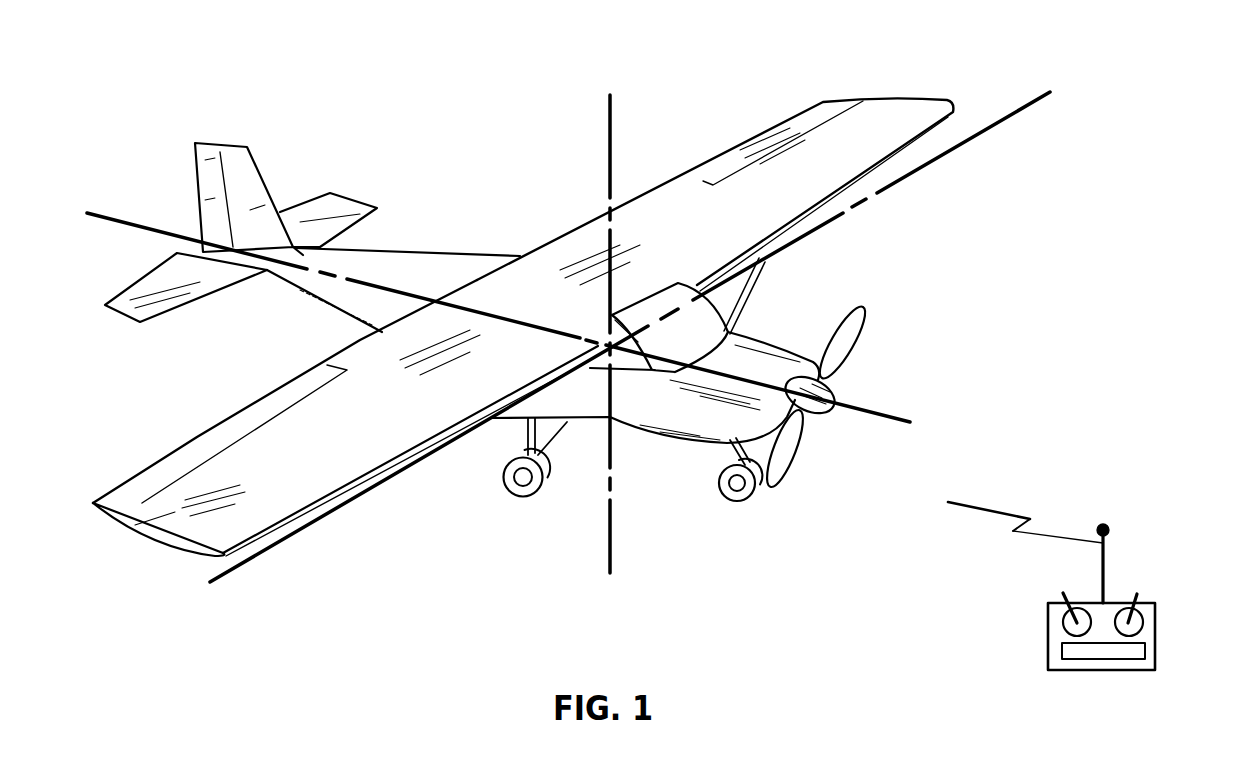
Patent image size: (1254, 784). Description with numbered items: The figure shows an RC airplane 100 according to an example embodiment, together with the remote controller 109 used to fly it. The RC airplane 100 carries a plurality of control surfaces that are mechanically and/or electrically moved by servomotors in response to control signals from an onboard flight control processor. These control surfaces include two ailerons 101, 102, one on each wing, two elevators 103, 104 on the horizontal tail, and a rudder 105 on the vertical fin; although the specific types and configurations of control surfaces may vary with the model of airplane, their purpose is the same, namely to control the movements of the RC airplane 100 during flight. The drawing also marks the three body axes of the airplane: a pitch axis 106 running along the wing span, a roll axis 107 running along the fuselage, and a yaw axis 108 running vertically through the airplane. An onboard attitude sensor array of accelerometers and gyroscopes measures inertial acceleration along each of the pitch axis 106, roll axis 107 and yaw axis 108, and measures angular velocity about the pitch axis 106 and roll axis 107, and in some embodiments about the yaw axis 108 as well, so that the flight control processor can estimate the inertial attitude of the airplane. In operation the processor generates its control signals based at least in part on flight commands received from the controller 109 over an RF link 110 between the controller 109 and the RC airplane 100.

The RC airplane 100 is at (549, 301).
The aileron 101 is at (772, 136).
The aileron 102 is at (200, 435).
The elevator 103 is at (307, 205).
The elevator 104 is at (140, 280).
The rudder 105 is at (195, 200).
The pitch axis 106 is at (1014, 108).
The roll axis 107 is at (877, 417).
The yaw axis 108 is at (610, 523).
The controller 109 is at (1155, 620).
The RF link 110 is at (1045, 532).